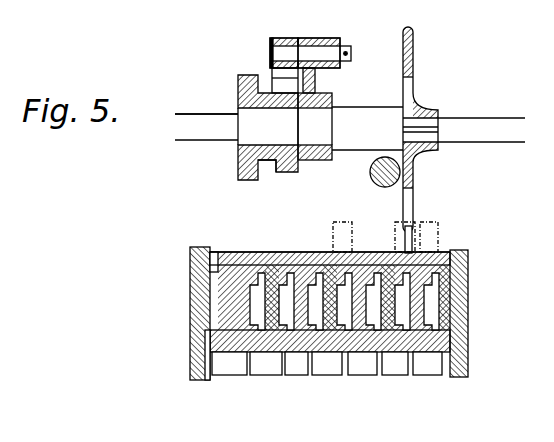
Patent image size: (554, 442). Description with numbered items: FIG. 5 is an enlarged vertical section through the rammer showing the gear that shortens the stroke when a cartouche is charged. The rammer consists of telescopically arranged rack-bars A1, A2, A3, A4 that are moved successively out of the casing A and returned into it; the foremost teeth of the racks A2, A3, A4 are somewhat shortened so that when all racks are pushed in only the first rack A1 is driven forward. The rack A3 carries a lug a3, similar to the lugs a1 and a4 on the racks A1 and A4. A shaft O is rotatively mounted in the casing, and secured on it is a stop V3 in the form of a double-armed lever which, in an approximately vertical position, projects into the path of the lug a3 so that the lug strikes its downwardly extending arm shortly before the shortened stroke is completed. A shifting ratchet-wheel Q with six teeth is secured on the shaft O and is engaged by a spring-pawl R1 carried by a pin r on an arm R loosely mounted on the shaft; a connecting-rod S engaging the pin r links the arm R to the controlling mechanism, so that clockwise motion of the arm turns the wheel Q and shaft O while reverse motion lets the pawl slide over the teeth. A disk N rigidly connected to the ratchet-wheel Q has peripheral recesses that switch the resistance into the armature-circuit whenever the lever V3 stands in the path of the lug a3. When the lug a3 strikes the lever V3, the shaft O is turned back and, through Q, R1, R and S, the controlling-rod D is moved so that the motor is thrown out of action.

The disk N is at (238, 93).
The arm R is at (328, 100).
The spring-pawl R1 is at (280, 78).
The pin r is at (280, 52).
The connecting-rod S is at (340, 41).
The stop lever V3 is at (414, 62).
The controlling-rod D is at (370, 175).
The shaft O is at (188, 133).
The shifting ratchet-wheel Q is at (286, 168).
The rammer-casing A is at (468, 318).
The lug a1 is at (333, 236).
The lug a3 is at (397, 232).
The lug a4 is at (438, 228).
The rack-bar A1 is at (338, 348).
The rack-bar A2 is at (372, 348).
The rack-bar A3 is at (404, 348).
The rack-bar A4 is at (433, 348).